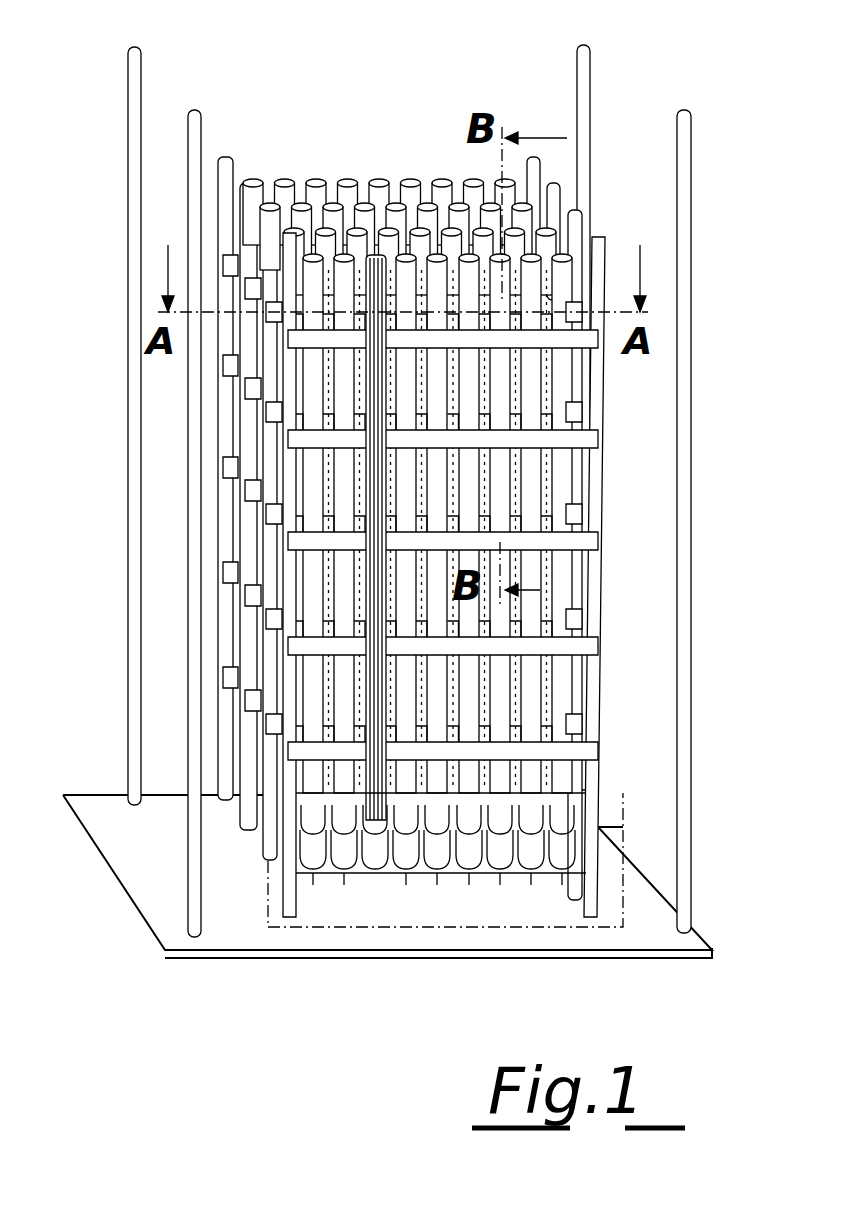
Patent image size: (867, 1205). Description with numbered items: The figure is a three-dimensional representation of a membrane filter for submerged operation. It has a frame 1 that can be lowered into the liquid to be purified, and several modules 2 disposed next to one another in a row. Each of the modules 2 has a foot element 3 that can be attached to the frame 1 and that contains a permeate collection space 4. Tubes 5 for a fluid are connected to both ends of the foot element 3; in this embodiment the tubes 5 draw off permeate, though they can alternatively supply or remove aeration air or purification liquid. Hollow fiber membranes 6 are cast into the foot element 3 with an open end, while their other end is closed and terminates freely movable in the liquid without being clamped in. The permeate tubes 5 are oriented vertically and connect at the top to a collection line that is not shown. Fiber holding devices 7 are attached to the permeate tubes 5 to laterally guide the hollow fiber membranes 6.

The frame 1 is at (225, 963).
The modules 2 is at (233, 907).
The foot element 3 is at (408, 893).
The permeate collection space 4 is at (335, 875).
The tubes 5 is at (283, 597).
The hollow fiber membranes 6 is at (378, 258).
The fiber holding devices 7 is at (600, 632).